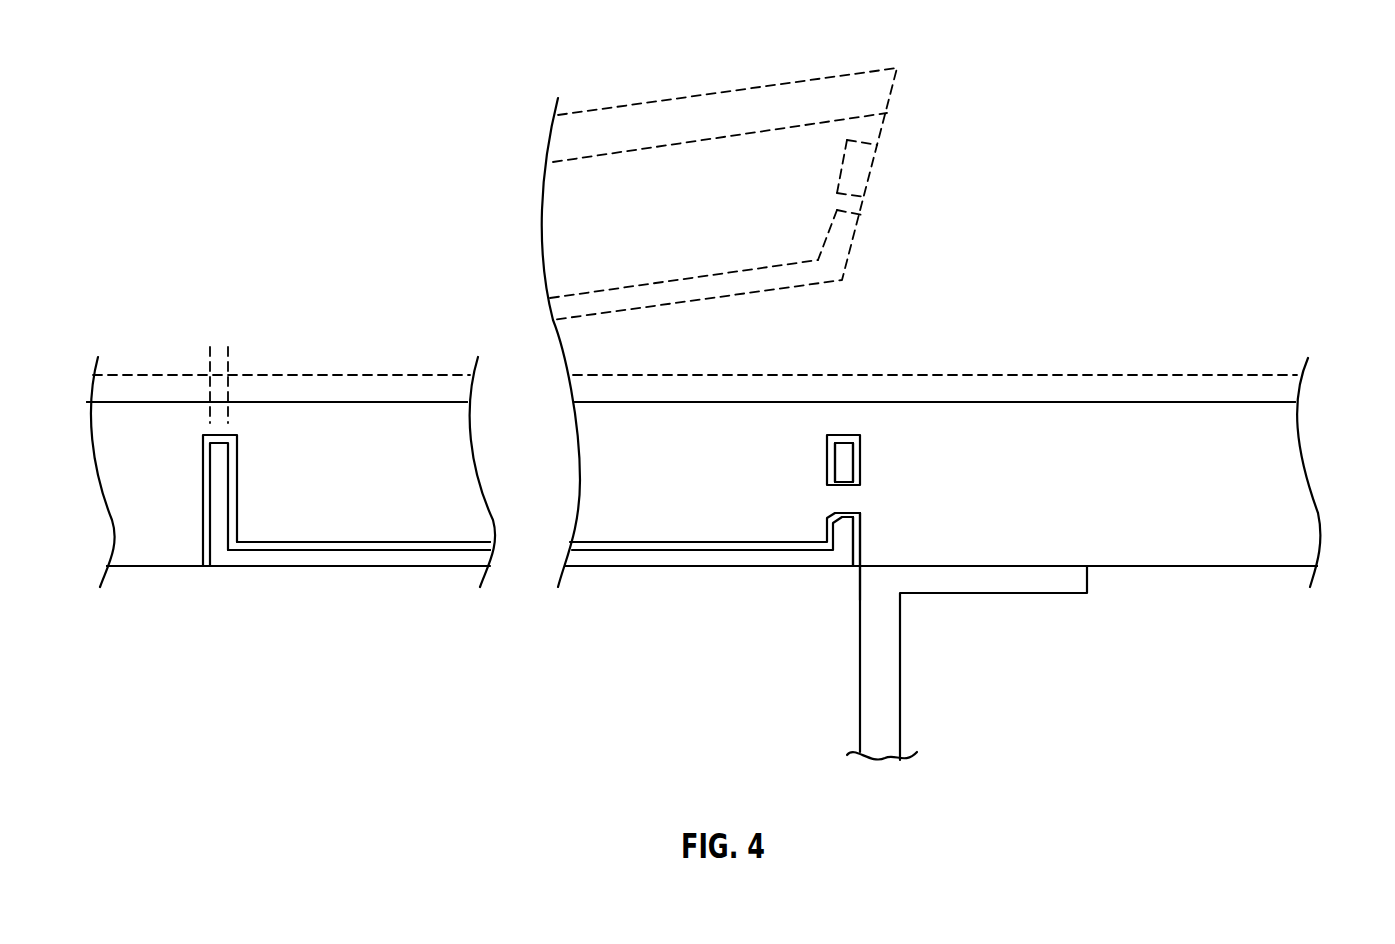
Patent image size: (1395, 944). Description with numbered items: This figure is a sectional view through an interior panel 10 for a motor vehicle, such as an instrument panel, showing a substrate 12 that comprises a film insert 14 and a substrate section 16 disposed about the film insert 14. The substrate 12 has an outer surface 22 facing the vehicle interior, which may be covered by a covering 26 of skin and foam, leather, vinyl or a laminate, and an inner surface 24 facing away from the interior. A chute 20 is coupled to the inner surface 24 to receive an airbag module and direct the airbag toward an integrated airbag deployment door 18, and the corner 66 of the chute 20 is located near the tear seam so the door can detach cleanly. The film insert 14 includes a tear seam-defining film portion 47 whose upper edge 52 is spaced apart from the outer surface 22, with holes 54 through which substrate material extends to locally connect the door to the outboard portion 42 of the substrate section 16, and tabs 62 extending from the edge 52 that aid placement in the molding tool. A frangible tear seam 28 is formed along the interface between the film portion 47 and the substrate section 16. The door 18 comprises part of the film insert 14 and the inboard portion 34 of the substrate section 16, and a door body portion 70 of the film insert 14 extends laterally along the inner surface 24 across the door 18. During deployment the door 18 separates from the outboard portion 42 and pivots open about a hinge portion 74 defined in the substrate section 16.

The interior panel 10 is at (1177, 193).
The substrate 12 is at (1290, 480).
The film insert 14 is at (347, 557).
The substrate section 16 is at (150, 547).
The integrated airbag deployment door 18 is at (697, 413).
The chute 20 is at (880, 642).
The outer surface 22 is at (1082, 400).
The inner surface 24 is at (1192, 567).
The covering 26 is at (960, 372).
The frangible tear seam 28 is at (862, 460).
The inboard portion 34 is at (335, 418).
The outboard portion 42 is at (1172, 417).
The tear seam-defining film portion 47 is at (847, 530).
The edge 52 is at (845, 445).
The holes 54 is at (845, 497).
The tabs 62 is at (224, 343).
The corner 66 is at (870, 580).
The door body portion 70 is at (677, 558).
The hinge portion 74 is at (120, 418).